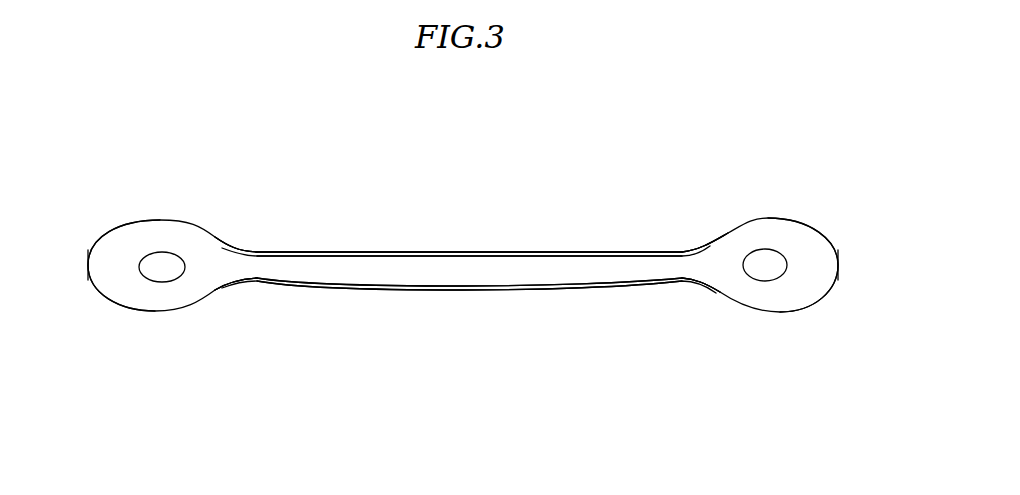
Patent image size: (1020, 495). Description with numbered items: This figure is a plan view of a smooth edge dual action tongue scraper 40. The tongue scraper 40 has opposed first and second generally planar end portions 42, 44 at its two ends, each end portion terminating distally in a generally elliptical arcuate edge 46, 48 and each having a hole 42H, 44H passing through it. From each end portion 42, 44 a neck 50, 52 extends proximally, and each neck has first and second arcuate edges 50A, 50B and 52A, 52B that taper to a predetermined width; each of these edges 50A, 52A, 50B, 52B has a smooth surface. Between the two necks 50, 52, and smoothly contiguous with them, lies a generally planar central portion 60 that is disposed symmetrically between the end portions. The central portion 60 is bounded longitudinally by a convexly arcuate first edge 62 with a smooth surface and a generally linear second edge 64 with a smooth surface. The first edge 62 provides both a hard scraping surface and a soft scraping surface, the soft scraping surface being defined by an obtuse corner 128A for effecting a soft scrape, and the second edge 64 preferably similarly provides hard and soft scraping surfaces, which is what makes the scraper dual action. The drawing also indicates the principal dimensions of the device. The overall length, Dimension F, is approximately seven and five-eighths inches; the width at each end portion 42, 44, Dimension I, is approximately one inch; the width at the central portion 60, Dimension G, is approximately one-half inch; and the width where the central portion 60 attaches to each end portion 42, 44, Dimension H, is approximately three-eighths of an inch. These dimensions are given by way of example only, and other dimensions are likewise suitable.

The tongue scraper 40 is at (428, 203).
The first end portion 42 is at (120, 222).
The hole 42H is at (162, 267).
The second end portion 44 is at (774, 214).
The hole 44H is at (765, 265).
The arcuate edge 46 is at (88, 266).
The arcuate edge 48 is at (840, 267).
The neck 50 is at (226, 226).
The first arcuate edge 50A is at (214, 235).
The second arcuate edge 50B is at (187, 311).
The neck 52 is at (731, 223).
The first arcuate edge 52A is at (708, 247).
The second arcuate edge 52B is at (718, 292).
The central portion 60 is at (512, 246).
The first edge 62 is at (489, 290).
The second edge 64 is at (538, 252).
The obtuse corner 128A is at (386, 252).
The length dimension F is at (838, 265).
The central portion width dimension G is at (463, 200).
The attachment width dimension H is at (255, 200).
The end portion width dimension I is at (885, 218).